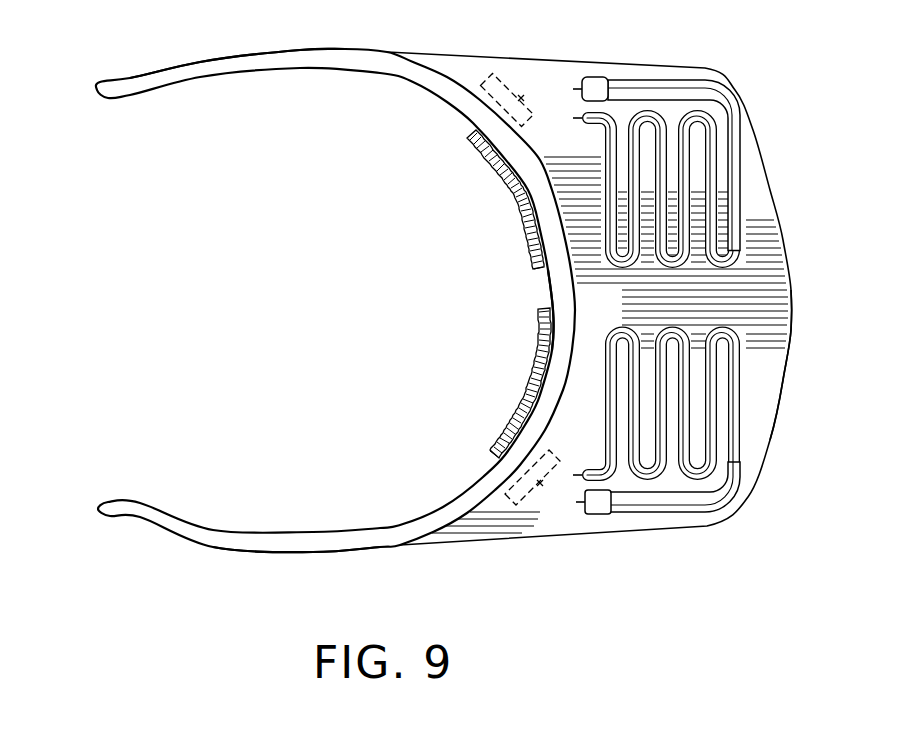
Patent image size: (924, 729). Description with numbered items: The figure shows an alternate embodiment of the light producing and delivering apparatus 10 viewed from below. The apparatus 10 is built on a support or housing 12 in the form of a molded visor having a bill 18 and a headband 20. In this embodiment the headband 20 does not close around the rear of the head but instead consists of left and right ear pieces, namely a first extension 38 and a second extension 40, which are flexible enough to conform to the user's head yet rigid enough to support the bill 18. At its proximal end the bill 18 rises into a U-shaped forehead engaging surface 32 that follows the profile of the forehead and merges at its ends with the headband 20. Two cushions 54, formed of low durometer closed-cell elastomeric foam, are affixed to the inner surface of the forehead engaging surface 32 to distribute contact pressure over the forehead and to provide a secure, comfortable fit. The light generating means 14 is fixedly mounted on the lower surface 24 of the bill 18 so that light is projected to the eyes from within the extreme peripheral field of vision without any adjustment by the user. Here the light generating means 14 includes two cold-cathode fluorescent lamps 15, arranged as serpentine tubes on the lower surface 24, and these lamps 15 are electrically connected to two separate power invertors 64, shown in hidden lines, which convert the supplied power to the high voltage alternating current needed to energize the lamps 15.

The apparatus 10 is at (140, 56).
The support or housing 12 is at (612, 321).
The light generating means 14 is at (744, 140).
The cold-cathode fluorescent lamp 15 is at (713, 100).
The bill 18 is at (774, 340).
The headband 20 is at (318, 62).
The lower surface 24 is at (760, 400).
The forehead engaging surface 32 is at (553, 289).
The first extension 38 is at (343, 546).
The second extension 40 is at (243, 62).
The cushions 54 is at (520, 200).
The power invertor 64 is at (521, 98).